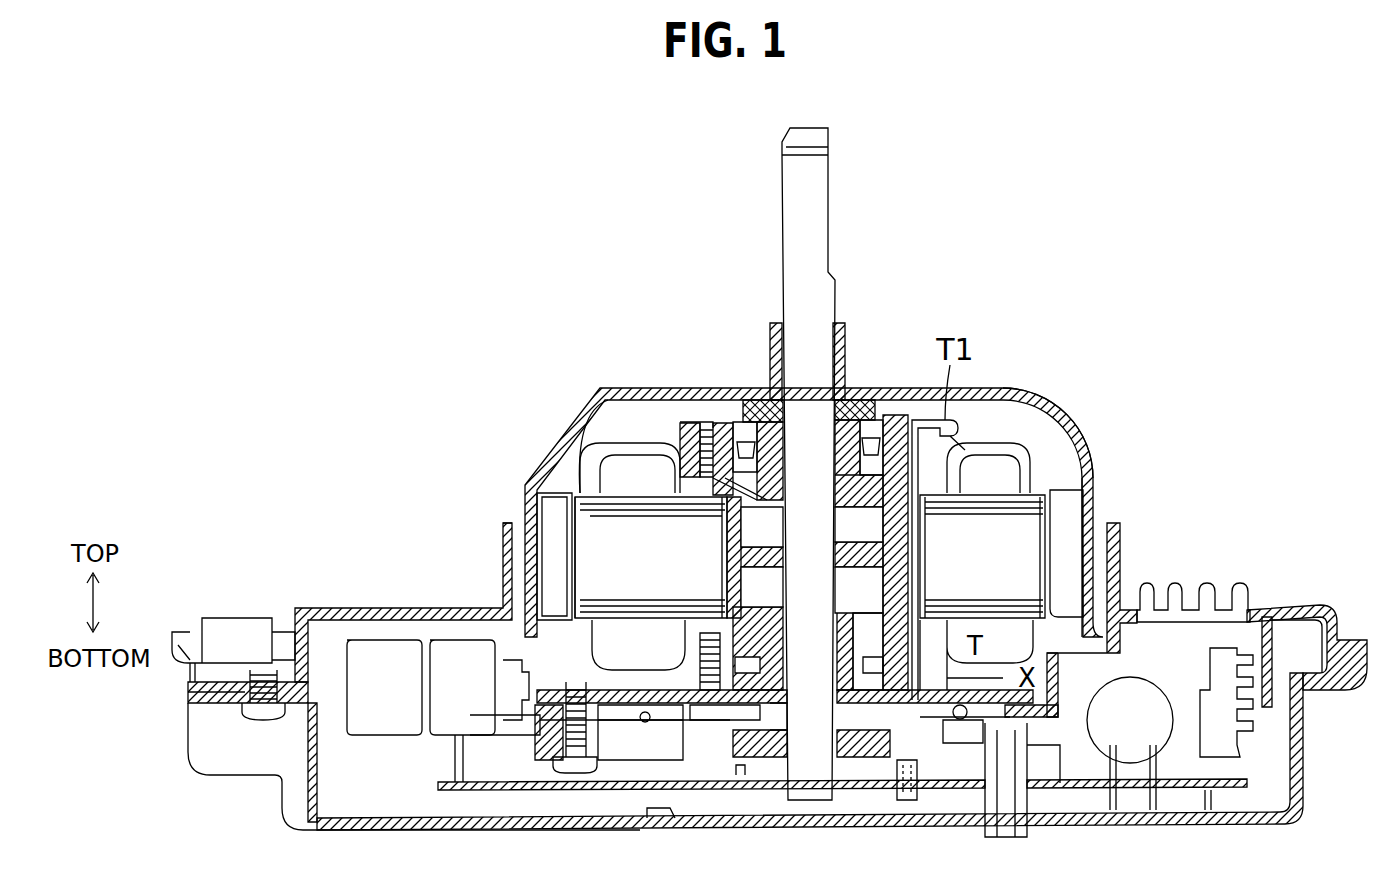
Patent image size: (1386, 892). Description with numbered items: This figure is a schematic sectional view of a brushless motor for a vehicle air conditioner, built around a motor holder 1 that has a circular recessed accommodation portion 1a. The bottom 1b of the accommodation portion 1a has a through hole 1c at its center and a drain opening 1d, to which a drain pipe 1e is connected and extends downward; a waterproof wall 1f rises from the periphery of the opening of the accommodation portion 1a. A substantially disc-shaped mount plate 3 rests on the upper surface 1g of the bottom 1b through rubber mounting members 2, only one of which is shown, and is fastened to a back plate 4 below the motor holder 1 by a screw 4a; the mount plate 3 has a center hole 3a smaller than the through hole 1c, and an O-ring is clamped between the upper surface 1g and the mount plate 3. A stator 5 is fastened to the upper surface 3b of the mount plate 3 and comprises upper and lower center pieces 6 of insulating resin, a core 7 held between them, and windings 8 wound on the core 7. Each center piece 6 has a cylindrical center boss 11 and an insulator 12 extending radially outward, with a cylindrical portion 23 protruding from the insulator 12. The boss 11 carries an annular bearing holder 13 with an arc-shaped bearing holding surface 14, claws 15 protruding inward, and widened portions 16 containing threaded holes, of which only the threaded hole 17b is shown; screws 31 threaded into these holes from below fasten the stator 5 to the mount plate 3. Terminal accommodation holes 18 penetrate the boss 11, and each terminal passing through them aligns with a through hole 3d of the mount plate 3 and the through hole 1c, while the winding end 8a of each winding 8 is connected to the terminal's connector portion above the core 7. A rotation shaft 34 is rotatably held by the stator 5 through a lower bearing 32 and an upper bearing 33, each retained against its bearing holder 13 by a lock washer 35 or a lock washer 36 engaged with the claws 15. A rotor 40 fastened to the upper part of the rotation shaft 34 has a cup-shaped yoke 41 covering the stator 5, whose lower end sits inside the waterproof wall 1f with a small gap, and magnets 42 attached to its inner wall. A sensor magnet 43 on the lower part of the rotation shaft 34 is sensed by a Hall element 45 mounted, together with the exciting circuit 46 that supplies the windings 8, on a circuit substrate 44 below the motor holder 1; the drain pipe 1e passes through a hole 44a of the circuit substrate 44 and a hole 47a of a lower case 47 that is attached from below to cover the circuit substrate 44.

The motor holder 1 is at (368, 606).
The accommodation portion 1a is at (510, 680).
The bottom 1b is at (612, 765).
The through hole 1c is at (910, 802).
The drain opening 1d is at (1058, 716).
The drain pipe 1e is at (1012, 793).
The waterproof wall 1f is at (504, 562).
The upper surface 1g is at (655, 762).
The rubber mounting member 2 is at (512, 702).
The mount plate 3 is at (540, 700).
The center hole 3a is at (777, 737).
The upper surface 3b is at (610, 690).
The through hole 3d is at (990, 690).
The back plate 4 is at (495, 793).
The screw 4a is at (560, 775).
The stator 5 is at (1046, 450).
The center piece 6 is at (1040, 558).
The core 7 is at (572, 548).
The winding 8 is at (975, 440).
The winding end 8a is at (990, 400).
The center boss 11 is at (968, 616).
The insulator 12 is at (1015, 616).
The bearing holder 13 is at (858, 612).
The bearing holding surface 14 is at (840, 631).
The claw 15 is at (915, 400).
The widened portion 16 is at (672, 460).
The threaded hole 17b is at (676, 618).
The terminal accommodation hole 18 is at (915, 566).
The cylindrical portion 23 is at (722, 550).
The screw 31 is at (705, 805).
The lower bearing 32 is at (777, 600).
The upper bearing 33 is at (880, 400).
The rotation shaft 34 is at (832, 194).
The lock washer 35 is at (778, 663).
The lock washer 36 is at (778, 460).
The rotor 40 is at (1022, 396).
The yoke 41 is at (1077, 442).
The magnet 42 is at (1088, 505).
The sensor magnet 43 is at (866, 792).
The circuit substrate 44 is at (1215, 812).
The hole 44a is at (1030, 775).
The Hall element 45 is at (742, 800).
The exciting circuit 46 is at (1140, 692).
The lower case 47 is at (380, 830).
The hole 47a is at (985, 830).